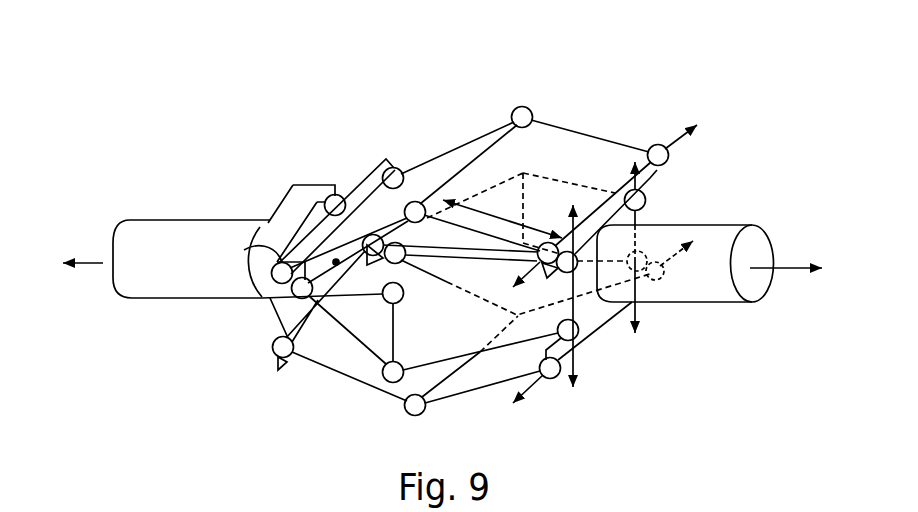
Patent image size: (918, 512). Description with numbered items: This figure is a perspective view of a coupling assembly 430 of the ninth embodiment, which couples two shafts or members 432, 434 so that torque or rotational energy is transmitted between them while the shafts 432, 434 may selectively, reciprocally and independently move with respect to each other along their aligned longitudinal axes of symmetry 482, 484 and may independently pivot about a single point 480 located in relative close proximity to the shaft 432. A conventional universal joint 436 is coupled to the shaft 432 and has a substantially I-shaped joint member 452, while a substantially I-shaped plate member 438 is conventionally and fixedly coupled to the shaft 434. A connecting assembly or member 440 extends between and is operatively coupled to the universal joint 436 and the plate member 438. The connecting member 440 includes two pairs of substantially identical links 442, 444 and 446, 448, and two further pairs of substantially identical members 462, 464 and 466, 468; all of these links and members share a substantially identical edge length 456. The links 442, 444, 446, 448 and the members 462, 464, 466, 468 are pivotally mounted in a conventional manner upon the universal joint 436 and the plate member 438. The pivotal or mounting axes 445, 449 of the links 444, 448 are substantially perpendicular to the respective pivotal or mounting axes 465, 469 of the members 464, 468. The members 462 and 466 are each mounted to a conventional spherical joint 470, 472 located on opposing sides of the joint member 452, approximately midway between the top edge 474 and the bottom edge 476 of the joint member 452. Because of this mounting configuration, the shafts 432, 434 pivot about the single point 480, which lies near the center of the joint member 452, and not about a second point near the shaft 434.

The coupling assembly 430 is at (229, 146).
The shaft 432 is at (150, 218).
The shaft 434 is at (737, 225).
The universal joint 436 is at (285, 193).
The plate member 438 is at (650, 177).
The connecting assembly 440 is at (457, 148).
The link 442 is at (480, 207).
The link 444 is at (587, 147).
The pivotal axis 445 is at (671, 129).
The link 446 is at (337, 370).
The link 448 is at (480, 388).
The pivotal axis 449 is at (532, 393).
The joint member 452 is at (388, 163).
The edge length 456 is at (490, 152).
The member 462 is at (413, 207).
The member 464 is at (597, 187).
The pivotal axis 465 is at (638, 313).
The member 466 is at (391, 328).
The member 468 is at (495, 328).
The pivotal axis 469 is at (577, 363).
The spherical joint 470 is at (283, 258).
The spherical joint 472 is at (274, 281).
The top edge 474 is at (256, 248).
The bottom edge 476 is at (285, 359).
The pivot point 480 is at (336, 264).
The longitudinal axis of symmetry 482 is at (83, 262).
The longitudinal axis of symmetry 484 is at (788, 266).